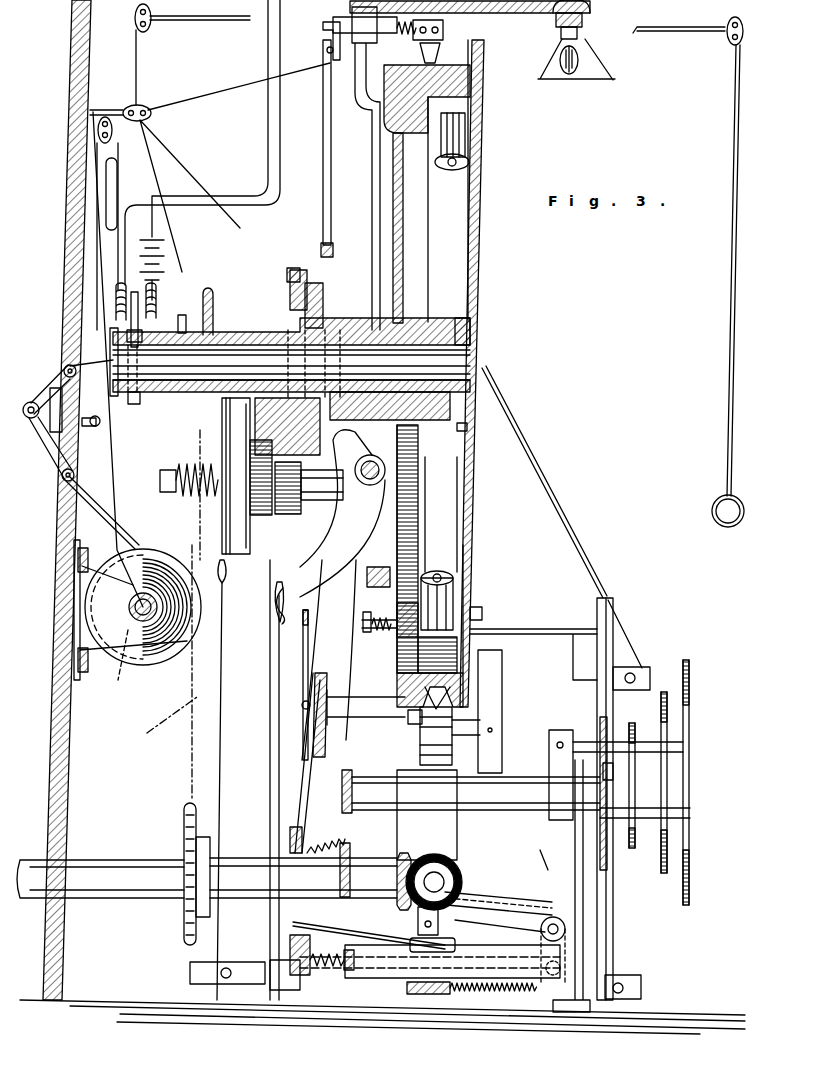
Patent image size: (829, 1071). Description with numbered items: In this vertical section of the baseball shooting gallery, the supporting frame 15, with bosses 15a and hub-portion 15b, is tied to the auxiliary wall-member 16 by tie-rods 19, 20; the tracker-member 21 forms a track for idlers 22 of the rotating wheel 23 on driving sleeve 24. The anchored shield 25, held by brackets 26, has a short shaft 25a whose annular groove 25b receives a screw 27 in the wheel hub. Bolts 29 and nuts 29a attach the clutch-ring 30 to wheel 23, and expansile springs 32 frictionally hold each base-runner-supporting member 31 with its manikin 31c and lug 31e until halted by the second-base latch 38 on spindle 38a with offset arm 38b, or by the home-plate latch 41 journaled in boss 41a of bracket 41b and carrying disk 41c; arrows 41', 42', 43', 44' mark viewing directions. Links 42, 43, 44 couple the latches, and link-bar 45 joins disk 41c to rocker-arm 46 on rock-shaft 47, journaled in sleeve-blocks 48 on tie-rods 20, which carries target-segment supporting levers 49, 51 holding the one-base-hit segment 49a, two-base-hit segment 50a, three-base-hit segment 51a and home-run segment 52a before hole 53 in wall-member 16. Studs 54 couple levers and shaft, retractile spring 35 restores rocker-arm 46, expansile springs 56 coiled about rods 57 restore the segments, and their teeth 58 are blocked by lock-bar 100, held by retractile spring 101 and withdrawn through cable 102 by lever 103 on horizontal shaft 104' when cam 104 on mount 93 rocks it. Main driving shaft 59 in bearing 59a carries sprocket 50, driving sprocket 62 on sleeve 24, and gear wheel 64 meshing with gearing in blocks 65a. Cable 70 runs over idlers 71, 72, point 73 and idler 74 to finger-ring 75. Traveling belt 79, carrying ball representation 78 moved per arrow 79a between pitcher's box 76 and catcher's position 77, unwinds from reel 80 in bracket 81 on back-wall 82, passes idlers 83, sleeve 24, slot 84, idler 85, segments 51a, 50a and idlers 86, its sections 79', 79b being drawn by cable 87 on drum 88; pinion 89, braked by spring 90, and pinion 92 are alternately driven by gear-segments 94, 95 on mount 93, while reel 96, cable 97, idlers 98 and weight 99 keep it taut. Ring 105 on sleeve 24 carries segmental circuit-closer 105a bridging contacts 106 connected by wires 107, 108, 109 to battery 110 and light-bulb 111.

The supporting frame 15 is at (396, 255).
The bosses 15a is at (395, 102).
The hub-portion 15b is at (330, 332).
The auxiliary wall-member 16 is at (612, 606).
The tie-rods 19 is at (502, 790).
The tie-rods 20 is at (386, 970).
The tracker-member 21 is at (410, 212).
The idlers 22 is at (470, 165).
The wheel 23 is at (448, 181).
The driving sleeve 24 is at (234, 333).
The shield 25 is at (482, 240).
The short shaft 25a is at (481, 332).
The annular groove 25b is at (481, 300).
The brackets 26 is at (513, 632).
The screw 27 is at (470, 428).
The bolts 29 is at (367, 633).
The nuts 29a is at (386, 614).
The clutch-ring 30 is at (397, 658).
The base-runner-supporting member 31 is at (436, 745).
The manikin 31c is at (502, 686).
The lug 31e is at (424, 734).
The expansile springs 32 is at (386, 634).
The retractile spring 35 is at (330, 834).
The second-base latch 38 is at (445, 30).
The spindle 38a is at (420, 48).
The offset arm 38b is at (324, 36).
The home-plate latch 41 is at (395, 699).
The arrows 41' is at (389, 741).
The boss 41a is at (404, 722).
The bracket 41b is at (352, 780).
The disk 41c is at (325, 690).
The link 42 is at (319, 744).
The arrows 42' is at (367, 914).
The link 43 is at (315, 148).
The arrows 43' is at (503, 490).
The link 44 is at (275, 685).
The arrow 44' is at (532, 1044).
The link-bar 45 is at (278, 787).
The rocker-arm 46 is at (486, 895).
The rock-shaft 47 is at (546, 916).
The sleeve-blocks 48 is at (566, 950).
The target-segment supporting lever 49 is at (540, 853).
The one-base-hit segment 49a is at (690, 686).
The sprocket 50 is at (182, 834).
The two-base-hit segment 50a is at (668, 790).
The target-segment supporting lever 51 is at (159, 672).
The three-base-hit segment 51a is at (632, 845).
The home-run segment 52a is at (617, 779).
The hole 53 is at (608, 732).
The stud 54 is at (403, 855).
The expansile springs 56 is at (322, 954).
The rod 57 is at (374, 987).
The teeth 58 is at (418, 920).
The main driving shaft 59 is at (114, 872).
The bearing 59a is at (296, 877).
The sprocket 62 is at (214, 300).
The gear wheel 64 is at (445, 882).
The blocks 65a is at (457, 813).
The cable 70 is at (184, 166).
The idler 71 is at (152, 108).
The idler 72 is at (150, 29).
The point 73 is at (640, 27).
The idler 74 is at (743, 38).
The finger-ring 75 is at (720, 527).
The pitcher's box 76 is at (491, 360).
The catcher's position 77 is at (613, 944).
The representation 78 is at (512, 1002).
The traveling belt 79 is at (114, 513).
The section 79' is at (392, 573).
The arrow 79a is at (556, 488).
The section 79b is at (547, 433).
The reel 80 is at (146, 652).
The bracket 81 is at (92, 662).
The back-wall 82 is at (86, 48).
The idlers 83 is at (66, 362).
The slot 84 is at (483, 368).
The idler 85 is at (646, 662).
The idlers 86 is at (227, 966).
The cable 87 is at (229, 580).
The drum 88 is at (238, 528).
The pinion 89 is at (258, 512).
The expansible spring 90 is at (186, 496).
The pinion 92 is at (286, 516).
The mount 93 is at (297, 265).
The gear-segment 94 is at (266, 430).
The gear-segment 95 is at (292, 275).
The reel 96 is at (124, 625).
The cable 97 is at (108, 480).
The idlers 98 is at (112, 140).
The weight 99 is at (110, 222).
The lock-bar 100 is at (455, 945).
The retractile spring 101 is at (460, 992).
The cable 102 is at (270, 805).
The lever 103 is at (361, 528).
The cam 104 is at (331, 291).
The horizontal shaft 104' is at (372, 482).
The ring 105 is at (134, 404).
The segmental circuit-closer 105a is at (140, 322).
The contacts 106 is at (133, 300).
The wires 107 is at (263, 110).
The wire 108 is at (158, 292).
The wire 109 is at (283, 152).
The battery 110 is at (150, 238).
The light-bulb 111 is at (567, 72).